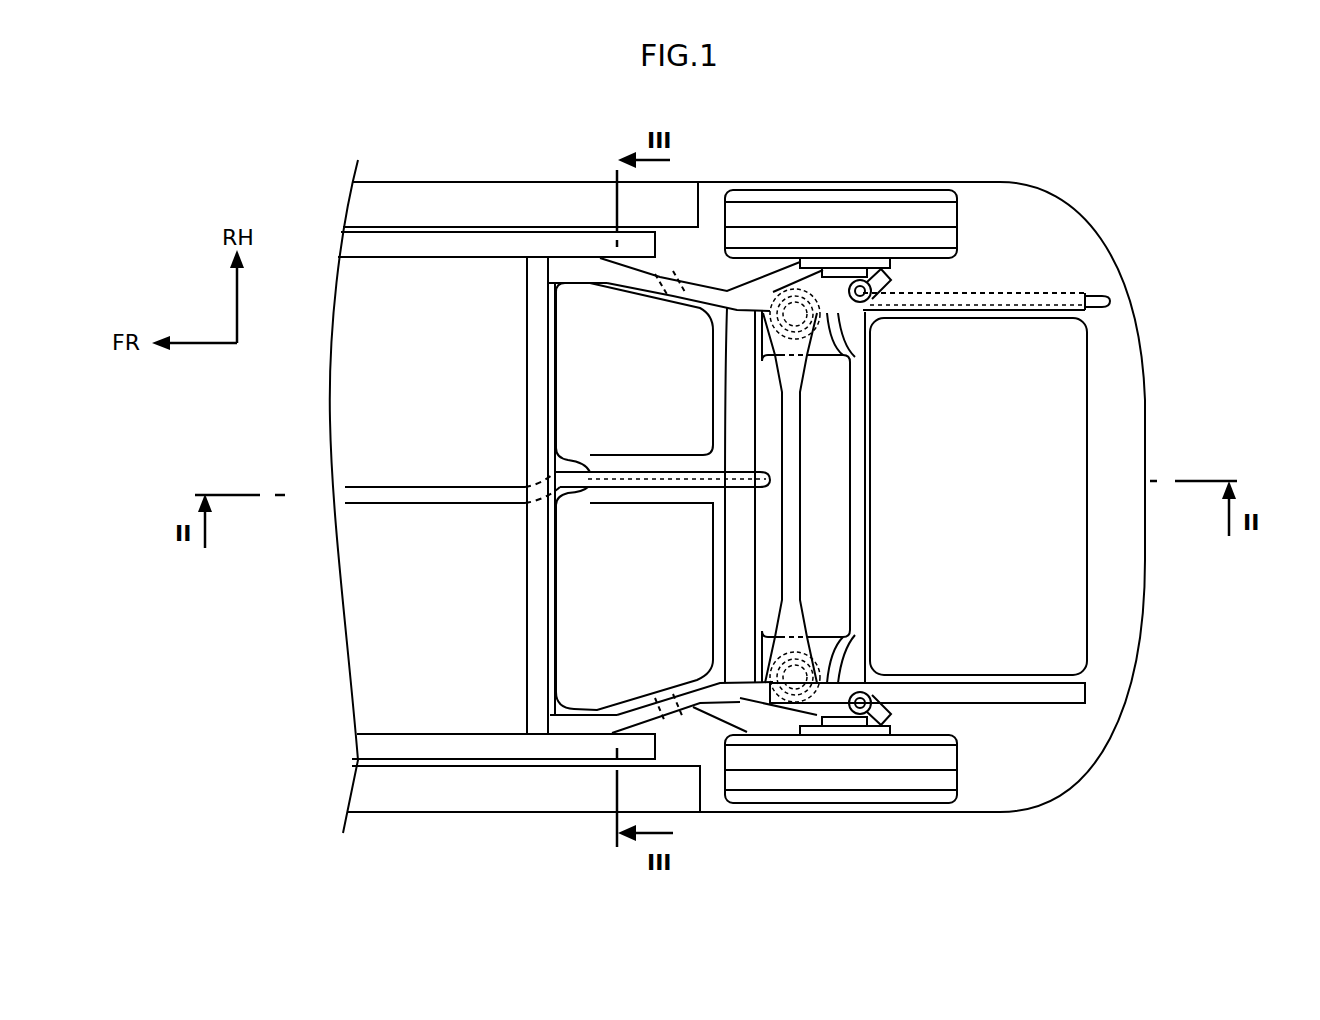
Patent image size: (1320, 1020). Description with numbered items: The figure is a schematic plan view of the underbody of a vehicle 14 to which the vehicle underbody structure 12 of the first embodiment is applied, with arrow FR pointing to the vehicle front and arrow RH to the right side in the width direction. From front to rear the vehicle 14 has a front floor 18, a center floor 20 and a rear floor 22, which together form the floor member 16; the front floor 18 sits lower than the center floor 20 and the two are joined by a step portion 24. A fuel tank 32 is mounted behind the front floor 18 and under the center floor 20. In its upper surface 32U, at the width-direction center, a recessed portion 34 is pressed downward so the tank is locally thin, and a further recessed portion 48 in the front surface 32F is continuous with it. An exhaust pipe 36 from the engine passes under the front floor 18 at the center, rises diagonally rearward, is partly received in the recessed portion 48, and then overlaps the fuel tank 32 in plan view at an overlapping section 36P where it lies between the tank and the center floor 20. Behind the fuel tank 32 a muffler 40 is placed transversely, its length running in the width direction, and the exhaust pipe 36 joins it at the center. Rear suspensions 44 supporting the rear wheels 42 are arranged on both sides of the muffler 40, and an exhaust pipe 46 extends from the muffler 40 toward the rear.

The vehicle underbody structure 12 is at (708, 218).
The vehicle 14 is at (1090, 145).
The floor member 16 is at (745, 440).
The front floor 18 is at (375, 692).
The center floor 20 is at (600, 280).
The rear floor 22 is at (1070, 622).
The step portion 24 is at (531, 647).
The fuel tank 32 is at (540, 347).
The front surface of fuel tank 32F is at (553, 397).
The upper surface of fuel tank 32U is at (566, 583).
The recessed portion 34 is at (650, 457).
The exhaust pipe 36 is at (557, 490).
The overlapping section 36P is at (636, 483).
The muffler 40 is at (852, 585).
The rear wheels 42 is at (955, 212).
The rear suspensions 44 is at (912, 275).
The exhaust pipe (rear) 46 is at (1108, 298).
The recessed portion 48 is at (562, 464).